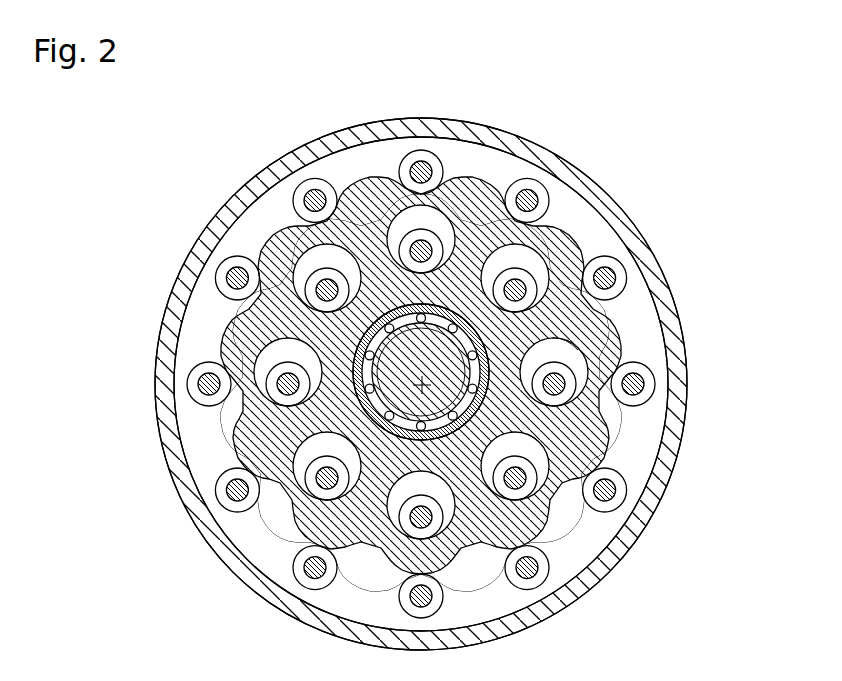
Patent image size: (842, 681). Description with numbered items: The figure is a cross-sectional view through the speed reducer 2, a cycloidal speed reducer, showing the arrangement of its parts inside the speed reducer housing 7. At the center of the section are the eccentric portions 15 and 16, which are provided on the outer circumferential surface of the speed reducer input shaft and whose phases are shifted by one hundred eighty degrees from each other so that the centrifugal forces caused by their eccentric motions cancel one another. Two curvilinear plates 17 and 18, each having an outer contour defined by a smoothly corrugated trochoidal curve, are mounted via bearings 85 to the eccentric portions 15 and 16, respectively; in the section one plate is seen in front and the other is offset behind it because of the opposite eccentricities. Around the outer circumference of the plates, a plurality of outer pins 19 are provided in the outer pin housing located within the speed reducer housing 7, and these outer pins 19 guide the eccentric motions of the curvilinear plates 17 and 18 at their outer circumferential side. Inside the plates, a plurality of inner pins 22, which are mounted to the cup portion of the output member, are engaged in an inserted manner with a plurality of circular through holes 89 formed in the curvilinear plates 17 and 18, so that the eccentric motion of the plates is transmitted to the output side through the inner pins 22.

The speed reducer 2 is at (236, 173).
The speed reducer housing 7 is at (203, 247).
The eccentric portion 15 is at (367, 402).
The eccentric portion 16 is at (233, 462).
The curvilinear plate 17 is at (558, 242).
The curvilinear plate 18 is at (647, 287).
The outer pins 19 is at (398, 168).
The inner pins 22 is at (513, 288).
The bearings 85 is at (367, 333).
The circular through holes 89 is at (567, 347).